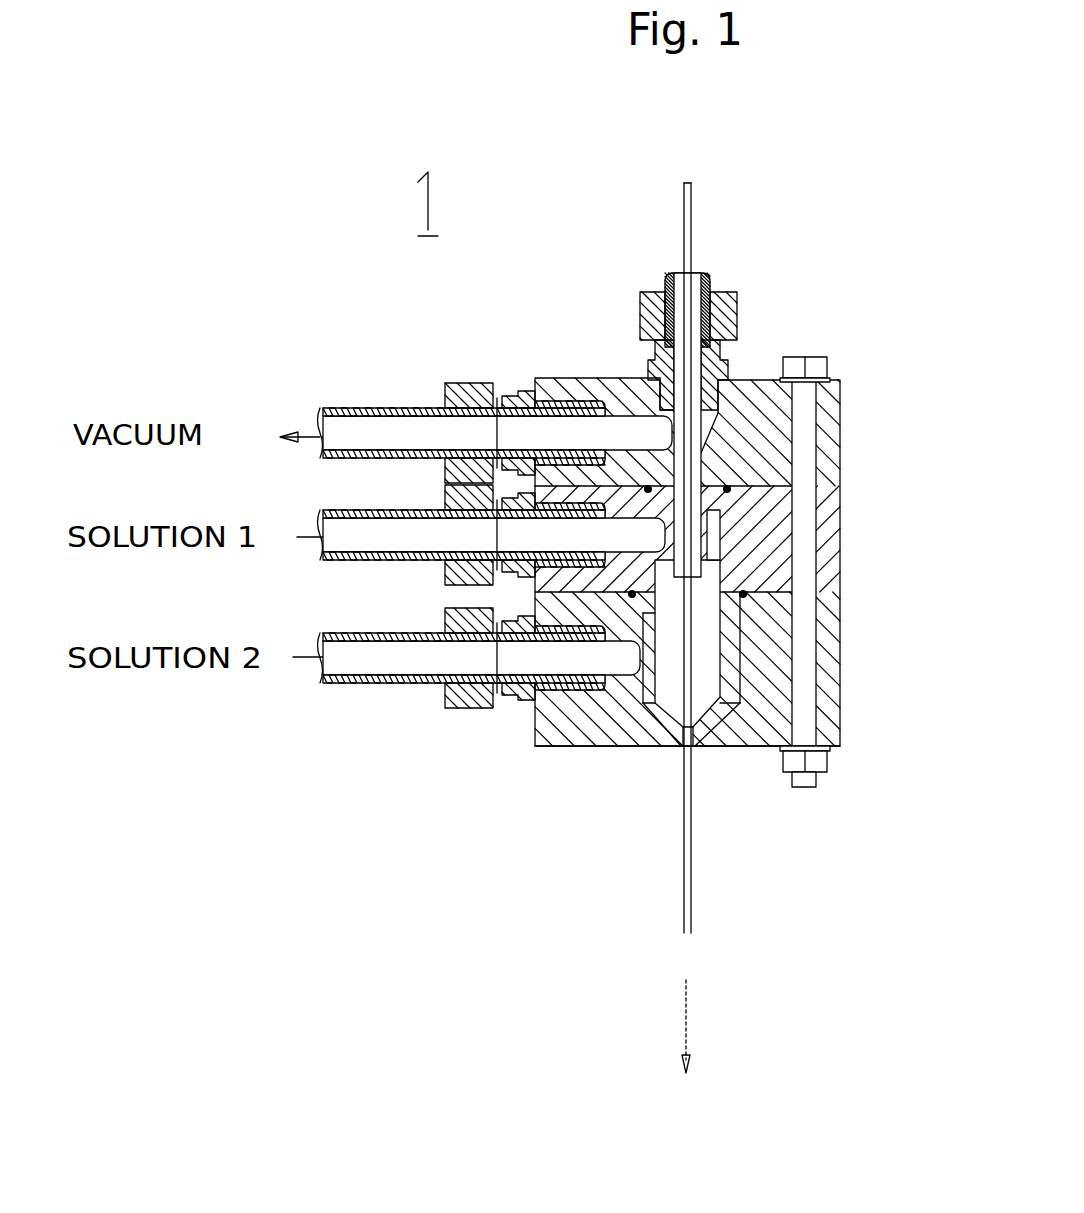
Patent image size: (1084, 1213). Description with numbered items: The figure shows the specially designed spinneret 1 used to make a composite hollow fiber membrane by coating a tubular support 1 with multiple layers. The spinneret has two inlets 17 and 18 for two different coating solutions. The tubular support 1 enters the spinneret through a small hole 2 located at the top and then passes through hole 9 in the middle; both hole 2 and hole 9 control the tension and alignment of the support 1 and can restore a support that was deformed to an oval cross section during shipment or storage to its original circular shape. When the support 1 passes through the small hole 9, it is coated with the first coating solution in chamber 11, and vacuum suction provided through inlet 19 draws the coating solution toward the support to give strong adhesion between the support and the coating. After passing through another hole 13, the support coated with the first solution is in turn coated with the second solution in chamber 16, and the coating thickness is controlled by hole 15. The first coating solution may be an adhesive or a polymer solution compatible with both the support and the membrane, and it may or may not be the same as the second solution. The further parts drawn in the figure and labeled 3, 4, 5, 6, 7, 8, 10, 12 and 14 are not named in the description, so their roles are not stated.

The tubular support 1 is at (687, 183).
The small hole 2 is at (697, 273).
The nut 3 is at (720, 317).
The fitting 4 is at (723, 357).
The bolt 5 is at (817, 367).
The housing body 6 is at (833, 420).
The upper body part 7 is at (745, 480).
The needle tube 8 is at (698, 545).
The hole 9 is at (740, 578).
The coating chamber 10 is at (705, 633).
The chamber 11 is at (735, 685).
The inner wall 12 is at (745, 692).
The hole 13 is at (742, 707).
The base plate 14 is at (833, 723).
The hole 15 is at (690, 750).
The chamber 16 is at (657, 717).
The inlet 17 is at (413, 680).
The inlet 18 is at (373, 560).
The inlet 19 is at (382, 408).